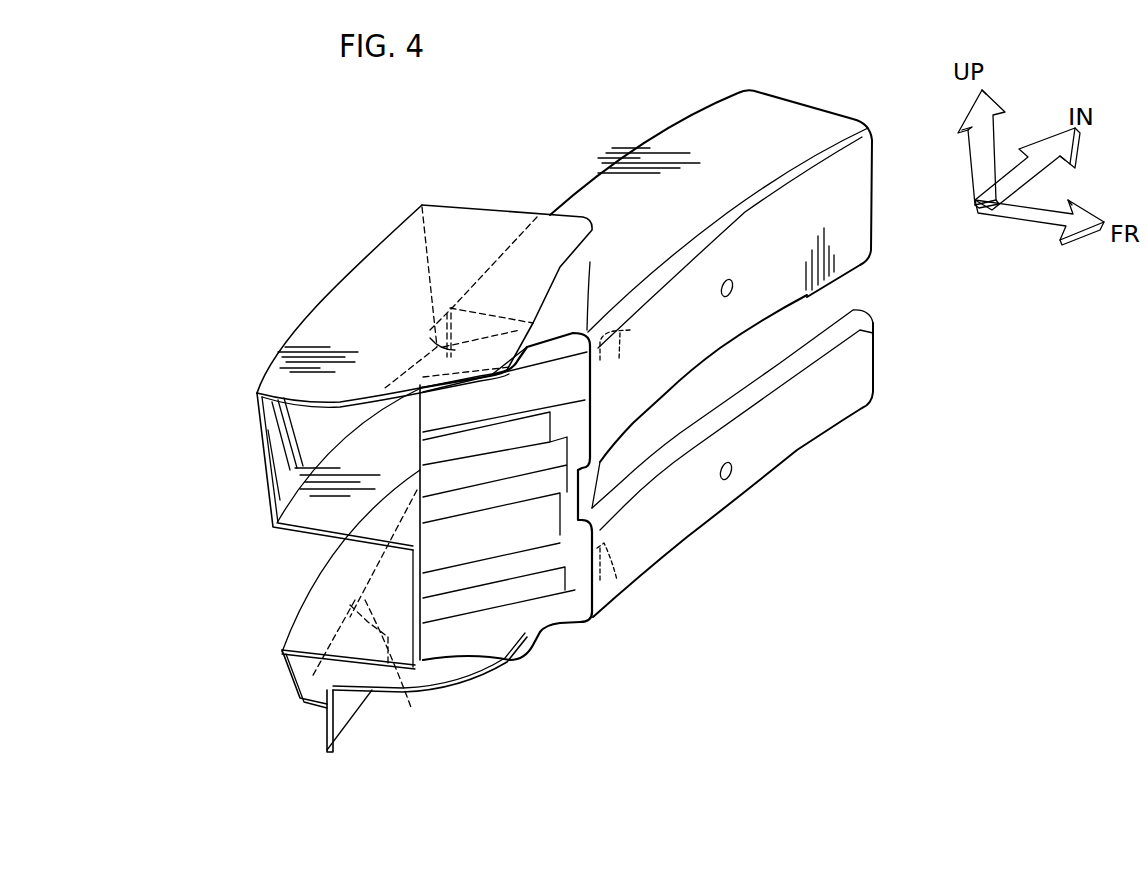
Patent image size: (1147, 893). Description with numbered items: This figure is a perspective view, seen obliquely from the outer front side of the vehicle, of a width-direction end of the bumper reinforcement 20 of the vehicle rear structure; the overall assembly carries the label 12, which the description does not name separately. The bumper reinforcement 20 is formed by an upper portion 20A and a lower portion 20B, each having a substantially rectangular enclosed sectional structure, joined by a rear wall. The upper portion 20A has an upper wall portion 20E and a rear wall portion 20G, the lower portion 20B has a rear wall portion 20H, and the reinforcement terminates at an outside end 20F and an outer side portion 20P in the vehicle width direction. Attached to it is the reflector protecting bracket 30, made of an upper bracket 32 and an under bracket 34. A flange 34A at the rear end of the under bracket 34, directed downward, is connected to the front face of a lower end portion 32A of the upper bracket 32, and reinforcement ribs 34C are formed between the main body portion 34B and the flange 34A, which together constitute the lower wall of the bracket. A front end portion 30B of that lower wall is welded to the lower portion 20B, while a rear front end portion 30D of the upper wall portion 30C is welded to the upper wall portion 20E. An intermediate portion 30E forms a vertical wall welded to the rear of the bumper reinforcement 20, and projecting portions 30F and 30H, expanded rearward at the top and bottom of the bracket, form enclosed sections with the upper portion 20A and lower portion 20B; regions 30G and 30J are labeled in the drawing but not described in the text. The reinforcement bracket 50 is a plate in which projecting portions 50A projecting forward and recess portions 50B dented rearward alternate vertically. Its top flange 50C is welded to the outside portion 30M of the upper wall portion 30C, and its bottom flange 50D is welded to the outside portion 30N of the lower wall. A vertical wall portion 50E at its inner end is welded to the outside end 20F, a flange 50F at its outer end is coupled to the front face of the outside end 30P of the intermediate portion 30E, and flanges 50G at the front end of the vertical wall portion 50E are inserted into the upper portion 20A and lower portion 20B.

The bumper reinforcement 12 is at (684, 88).
The bumper reinforcement 20 is at (614, 158).
The upper portion 20A is at (744, 257).
The lower portion 20B is at (765, 463).
The upper wall portion 20E is at (784, 120).
The outside end 20F is at (612, 445).
The rear wall portion 20G is at (705, 343).
The rear wall portion 20H is at (680, 537).
The outer side portion 20P is at (525, 237).
The reflector protecting bracket 30 is at (403, 507).
The front end portion 30B is at (380, 700).
The upper wall portion 30C is at (452, 286).
The rear front end portion 30D is at (589, 265).
The intermediate portion 30E is at (403, 603).
The projecting portion 30F is at (291, 468).
The side wall surface 30G is at (270, 455).
The projecting portion 30H is at (277, 659).
The bent portion of lower flange 30J is at (293, 693).
The outside portion 30M is at (440, 352).
The outside portion 30N is at (473, 667).
The outside end 30P is at (355, 613).
The upper bracket 32 is at (294, 752).
The lower end portion 32A is at (310, 718).
The under bracket 34 is at (427, 724).
The flange 34A is at (357, 722).
The main body portion 34B is at (440, 693).
The reinforcement ribs 34C is at (383, 700).
The reinforcement bracket 50 is at (556, 487).
The projecting portion 50A is at (515, 477).
The recess portion 50B is at (536, 487).
The flange 50C is at (505, 360).
The flange 50D is at (507, 650).
The vertical wall portion 50E is at (600, 492).
The flange 50F is at (425, 570).
The flange 50G is at (616, 363).